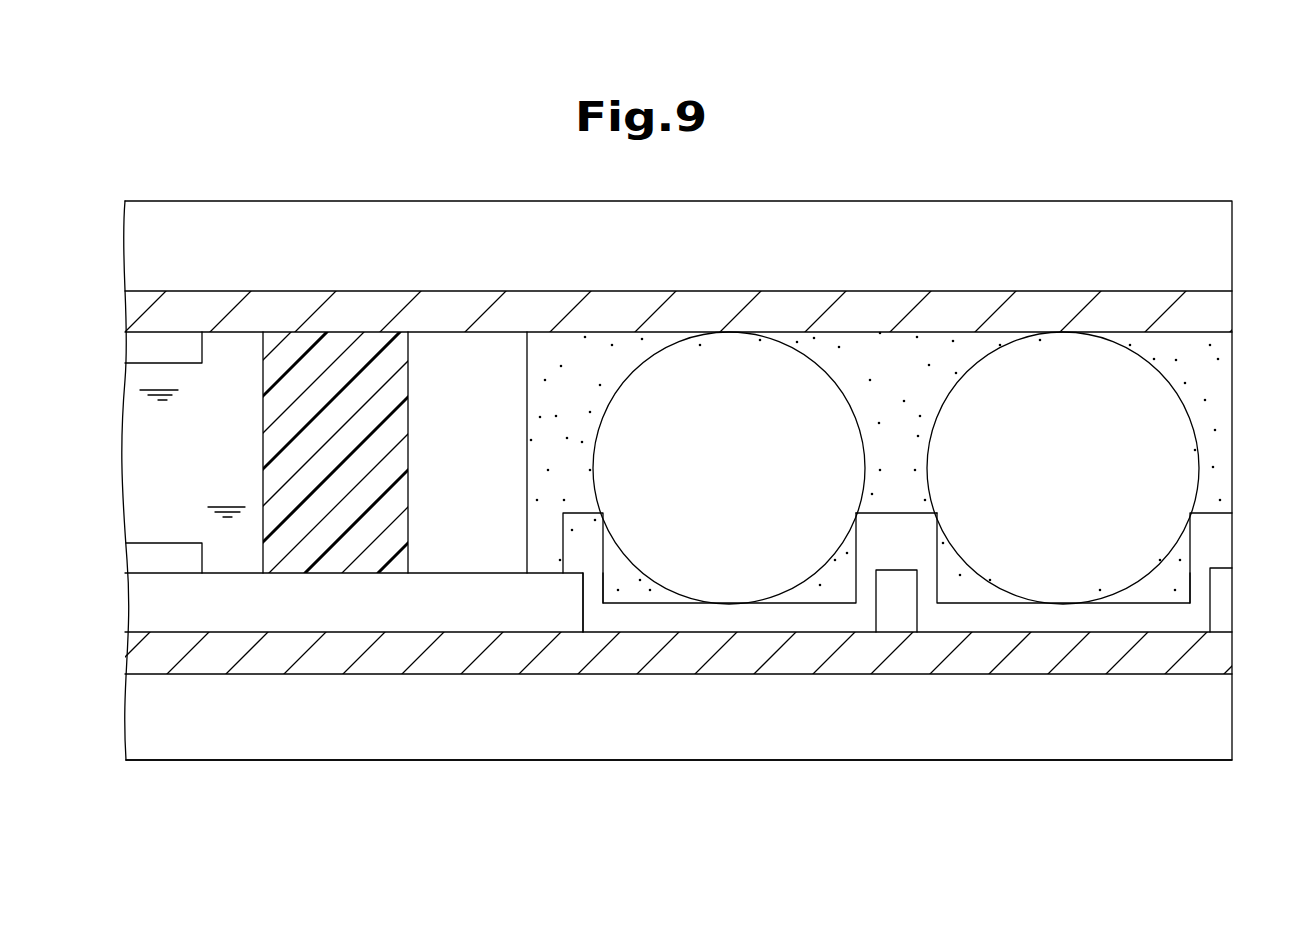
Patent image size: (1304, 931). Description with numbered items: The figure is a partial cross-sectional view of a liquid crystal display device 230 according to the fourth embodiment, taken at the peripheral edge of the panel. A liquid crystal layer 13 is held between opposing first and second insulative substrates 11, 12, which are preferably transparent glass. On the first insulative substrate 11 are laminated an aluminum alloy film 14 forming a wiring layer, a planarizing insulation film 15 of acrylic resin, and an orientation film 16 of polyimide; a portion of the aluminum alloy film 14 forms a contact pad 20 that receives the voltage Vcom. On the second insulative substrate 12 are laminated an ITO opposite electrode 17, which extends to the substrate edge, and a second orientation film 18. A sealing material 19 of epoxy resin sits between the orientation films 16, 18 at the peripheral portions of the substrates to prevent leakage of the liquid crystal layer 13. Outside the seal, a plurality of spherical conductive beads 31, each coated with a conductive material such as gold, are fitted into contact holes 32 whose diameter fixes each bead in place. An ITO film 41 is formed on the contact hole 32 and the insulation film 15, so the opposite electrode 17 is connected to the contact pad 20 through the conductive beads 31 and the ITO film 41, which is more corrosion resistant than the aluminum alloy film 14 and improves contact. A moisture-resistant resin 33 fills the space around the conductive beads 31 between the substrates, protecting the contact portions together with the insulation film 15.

The liquid crystal display device 230 is at (998, 149).
The first insulative substrate 11 is at (1108, 748).
The second insulative substrate 12 is at (1232, 242).
The liquid crystal layer 13 is at (136, 446).
The aluminum alloy film 14 is at (383, 674).
The planarizing insulation film 15 is at (136, 600).
The orientation film 16 is at (136, 556).
The opposite electrode 17 is at (128, 316).
The second orientation film 18 is at (132, 350).
The sealing material 19 is at (263, 419).
The contact pad 20 is at (834, 668).
The conductive beads 31 is at (945, 400).
The contact holes 32 is at (584, 618).
The resin 33 is at (534, 425).
The ITO film 41 is at (898, 512).